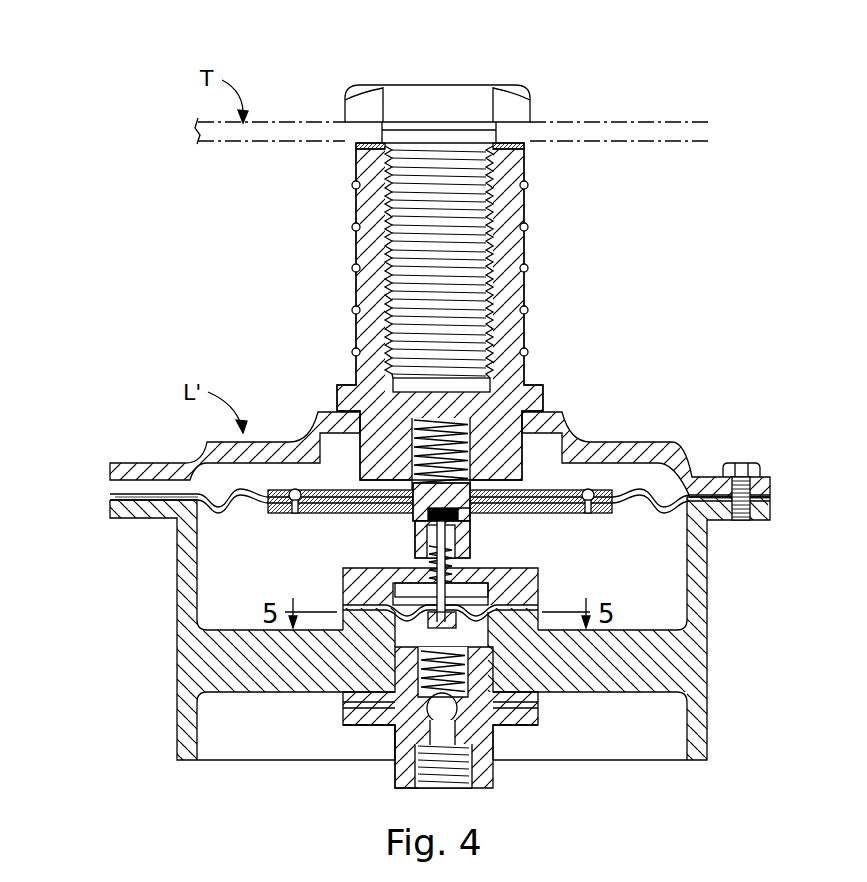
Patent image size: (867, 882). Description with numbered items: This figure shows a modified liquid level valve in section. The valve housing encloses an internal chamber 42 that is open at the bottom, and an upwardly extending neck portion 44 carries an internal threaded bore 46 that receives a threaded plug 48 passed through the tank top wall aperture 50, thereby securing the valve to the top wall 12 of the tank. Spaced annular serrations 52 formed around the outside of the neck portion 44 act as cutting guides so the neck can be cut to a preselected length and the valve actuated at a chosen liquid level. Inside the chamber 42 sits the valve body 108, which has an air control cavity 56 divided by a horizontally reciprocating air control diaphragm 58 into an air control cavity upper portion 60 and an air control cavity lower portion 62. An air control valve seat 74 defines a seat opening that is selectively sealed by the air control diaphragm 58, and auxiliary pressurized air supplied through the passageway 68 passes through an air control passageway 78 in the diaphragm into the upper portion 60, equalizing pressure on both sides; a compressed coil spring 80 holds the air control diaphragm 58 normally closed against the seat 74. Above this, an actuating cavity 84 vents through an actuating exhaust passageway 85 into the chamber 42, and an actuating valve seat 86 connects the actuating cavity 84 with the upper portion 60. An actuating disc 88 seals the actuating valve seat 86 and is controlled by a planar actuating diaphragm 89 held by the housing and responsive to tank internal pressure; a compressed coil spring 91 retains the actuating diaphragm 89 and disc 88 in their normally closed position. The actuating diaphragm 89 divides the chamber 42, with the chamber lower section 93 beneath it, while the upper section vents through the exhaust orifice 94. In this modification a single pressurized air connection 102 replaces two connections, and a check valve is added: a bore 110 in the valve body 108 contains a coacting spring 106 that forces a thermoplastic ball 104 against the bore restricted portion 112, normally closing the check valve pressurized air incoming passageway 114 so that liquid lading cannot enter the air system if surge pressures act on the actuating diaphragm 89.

The top wall 12 is at (606, 121).
The neck portion 44 is at (525, 293).
The internal threaded bore 46 is at (487, 256).
The threaded plug 48 is at (423, 92).
The tank top wall aperture 50 is at (366, 120).
The annular serrations 52 is at (528, 185).
The internal chamber 42 is at (442, 571).
The air control cavity 56 is at (397, 597).
The air control diaphragm 58 is at (420, 617).
The air control cavity upper portion 60 is at (505, 585).
The air control cavity lower portion 62 is at (500, 608).
The passageway 68 is at (440, 645).
The air control valve seat 74 is at (430, 633).
The air control passageway 78 is at (464, 690).
The compressed coil spring 80 is at (462, 559).
The actuating cavity 84 is at (413, 517).
The actuating exhaust passageway 85 is at (460, 521).
The actuating valve seat 86 is at (470, 514).
The actuating disc 88 is at (450, 490).
The actuating diaphragm 89 is at (323, 490).
The compressed coil spring 91 is at (411, 419).
The chamber lower section 93 is at (677, 733).
The exhaust orifice 94 is at (122, 495).
The pressurized air connection 102 is at (467, 781).
The thermoplastic ball 104 is at (407, 737).
The coacting spring 106 is at (483, 678).
The valve body 108 is at (342, 694).
The bore 110 is at (395, 716).
The bore restricted portion 112 is at (473, 703).
The check valve pressurized air incoming passageway 114 is at (458, 733).